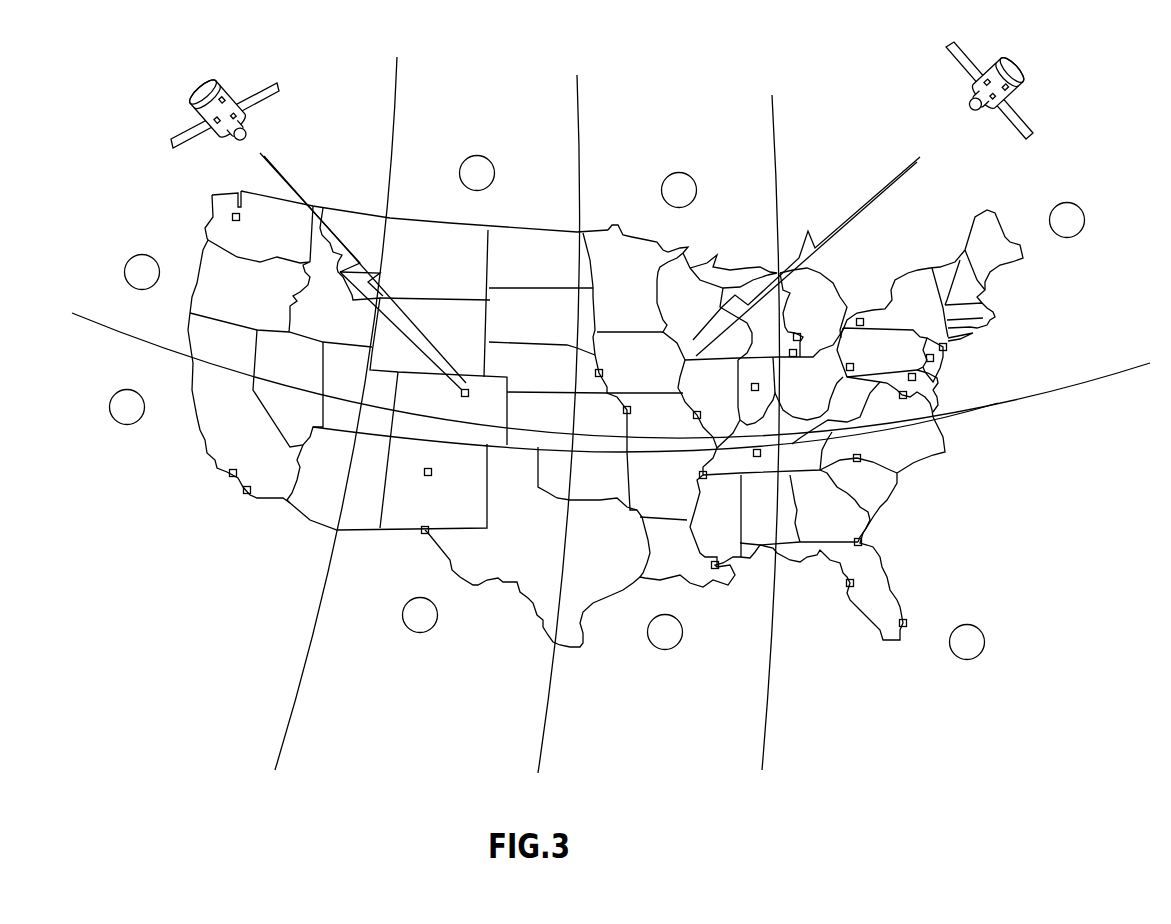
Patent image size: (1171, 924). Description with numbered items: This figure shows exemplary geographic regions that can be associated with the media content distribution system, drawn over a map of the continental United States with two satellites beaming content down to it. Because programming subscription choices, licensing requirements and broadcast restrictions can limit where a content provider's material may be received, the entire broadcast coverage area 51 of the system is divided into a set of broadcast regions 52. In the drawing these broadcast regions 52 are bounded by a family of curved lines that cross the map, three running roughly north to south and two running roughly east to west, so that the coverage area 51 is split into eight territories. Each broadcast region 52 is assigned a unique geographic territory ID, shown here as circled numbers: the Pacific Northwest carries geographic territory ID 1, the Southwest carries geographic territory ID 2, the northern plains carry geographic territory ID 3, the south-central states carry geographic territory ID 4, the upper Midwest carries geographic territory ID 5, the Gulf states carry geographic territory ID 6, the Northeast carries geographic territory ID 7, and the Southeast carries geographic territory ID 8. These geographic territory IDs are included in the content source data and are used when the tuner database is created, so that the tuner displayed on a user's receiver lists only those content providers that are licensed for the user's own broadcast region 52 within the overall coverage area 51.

The broadcast coverage area 51 is at (557, 44).
The broadcast region 52 is at (63, 198).
The geographic territory ID 1 is at (142, 272).
The geographic territory ID 2 is at (127, 407).
The geographic territory ID 3 is at (477, 173).
The geographic territory ID 4 is at (420, 615).
The geographic territory ID 5 is at (679, 190).
The geographic territory ID 6 is at (665, 632).
The geographic territory ID 7 is at (1067, 220).
The geographic territory ID 8 is at (967, 642).